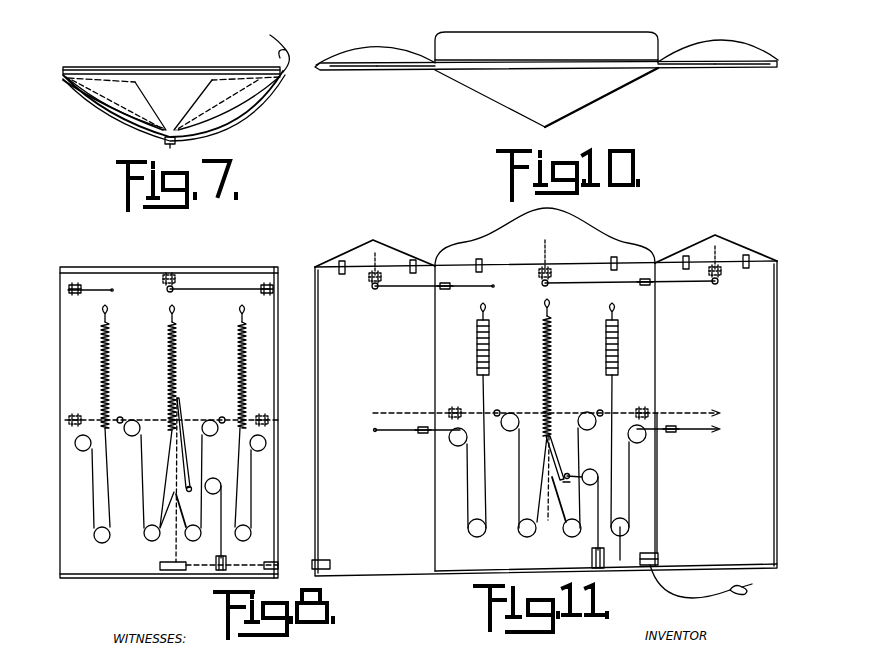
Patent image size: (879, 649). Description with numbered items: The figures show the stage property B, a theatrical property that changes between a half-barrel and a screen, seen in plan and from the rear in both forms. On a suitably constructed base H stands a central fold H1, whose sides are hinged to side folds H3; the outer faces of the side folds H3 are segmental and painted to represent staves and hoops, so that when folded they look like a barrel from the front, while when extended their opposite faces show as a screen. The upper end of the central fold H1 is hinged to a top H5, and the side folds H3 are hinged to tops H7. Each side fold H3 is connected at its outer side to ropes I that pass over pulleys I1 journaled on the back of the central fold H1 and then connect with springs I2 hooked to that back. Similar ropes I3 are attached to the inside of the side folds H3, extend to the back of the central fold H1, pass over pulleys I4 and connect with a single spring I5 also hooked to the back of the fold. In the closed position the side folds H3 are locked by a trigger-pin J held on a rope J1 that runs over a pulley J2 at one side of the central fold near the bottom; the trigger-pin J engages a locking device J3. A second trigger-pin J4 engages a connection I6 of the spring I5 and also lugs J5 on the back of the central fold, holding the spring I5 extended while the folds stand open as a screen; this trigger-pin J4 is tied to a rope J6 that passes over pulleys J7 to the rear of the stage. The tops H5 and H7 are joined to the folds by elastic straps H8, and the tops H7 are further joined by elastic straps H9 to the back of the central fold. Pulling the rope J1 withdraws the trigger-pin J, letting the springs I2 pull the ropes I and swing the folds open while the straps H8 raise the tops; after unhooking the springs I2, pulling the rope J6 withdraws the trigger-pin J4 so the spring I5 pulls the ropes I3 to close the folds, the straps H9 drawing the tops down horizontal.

In FIG. 7, the stage property B is at (165, 56).
In FIG. 10, the stage property B is at (547, 41).
In FIG. 8, the stage property B is at (163, 411).
In FIG. 11, the stage property B is at (546, 395).
In FIG. 10, the base H is at (598, 38).
In FIG. 8, the base H is at (272, 356).
In FIG. 7, the central fold H1 is at (170, 75).
In FIG. 11, the central fold H1 is at (440, 340).
In FIG. 7, the side folds H3 is at (98, 110).
In FIG. 10, the side folds H3 is at (352, 72).
In FIG. 11, the side folds H3 is at (546, 418).
In FIG. 7, the top H5 is at (156, 86).
In FIG. 10, the top H5 is at (546, 62).
In FIG. 8, the top H5 is at (218, 271).
In FIG. 11, the top H5 is at (580, 243).
In FIG. 7, the tops H7 is at (122, 106).
In FIG. 10, the tops H7 is at (396, 72).
In FIG. 11, the tops H7 is at (394, 258).
In FIG. 11, the elastic straps H8 is at (343, 276).
In FIG. 8, the elastic straps H9 is at (89, 291).
In FIG. 11, the elastic straps H9 is at (399, 288).
In FIG. 8, the ropes I is at (92, 498).
In FIG. 11, the ropes I is at (393, 436).
In FIG. 8, the pulleys I1 is at (76, 444).
In FIG. 11, the pulleys I1 is at (455, 448).
In FIG. 8, the springs I2 is at (101, 366).
In FIG. 11, the springs I2 is at (490, 357).
In FIG. 8, the ropes I3 is at (141, 480).
In FIG. 11, the ropes I3 is at (478, 412).
In FIG. 8, the pulleys I4 is at (132, 421).
In FIG. 11, the pulleys I4 is at (504, 432).
In FIG. 8, the spring I5 is at (178, 372).
In FIG. 11, the spring I5 is at (556, 372).
In FIG. 11, the connection I6 is at (553, 455).
In FIG. 11, the trigger-pin J is at (746, 590).
In FIG. 7, the rope J1 is at (282, 48).
In FIG. 11, the rope J1 is at (680, 594).
In FIG. 7, the pulley J2 is at (286, 60).
In FIG. 11, the pulley J2 is at (660, 560).
In FIG. 7, the locking device J3 is at (169, 148).
In FIG. 8, the locking device J3 is at (310, 571).
In FIG. 11, the locking device J3 is at (312, 570).
In FIG. 8, the trigger-pin J4 is at (191, 484).
In FIG. 11, the trigger-pin J4 is at (576, 497).
In FIG. 11, the lugs J5 is at (560, 476).
In FIG. 8, the rope J6 is at (216, 578).
In FIG. 11, the rope J6 is at (598, 572).
In FIG. 8, the pulleys J7 is at (214, 478).
In FIG. 11, the pulleys J7 is at (590, 470).